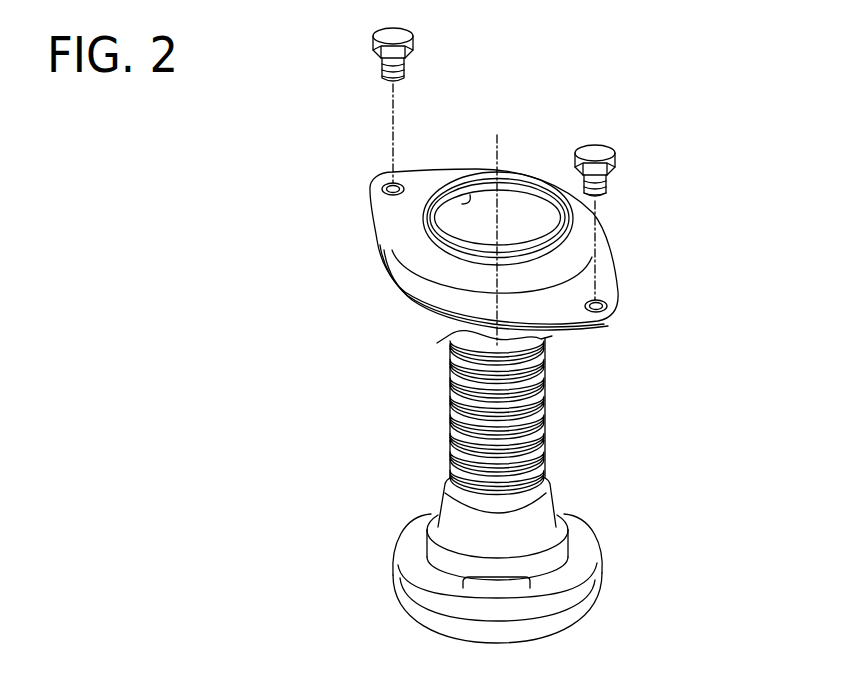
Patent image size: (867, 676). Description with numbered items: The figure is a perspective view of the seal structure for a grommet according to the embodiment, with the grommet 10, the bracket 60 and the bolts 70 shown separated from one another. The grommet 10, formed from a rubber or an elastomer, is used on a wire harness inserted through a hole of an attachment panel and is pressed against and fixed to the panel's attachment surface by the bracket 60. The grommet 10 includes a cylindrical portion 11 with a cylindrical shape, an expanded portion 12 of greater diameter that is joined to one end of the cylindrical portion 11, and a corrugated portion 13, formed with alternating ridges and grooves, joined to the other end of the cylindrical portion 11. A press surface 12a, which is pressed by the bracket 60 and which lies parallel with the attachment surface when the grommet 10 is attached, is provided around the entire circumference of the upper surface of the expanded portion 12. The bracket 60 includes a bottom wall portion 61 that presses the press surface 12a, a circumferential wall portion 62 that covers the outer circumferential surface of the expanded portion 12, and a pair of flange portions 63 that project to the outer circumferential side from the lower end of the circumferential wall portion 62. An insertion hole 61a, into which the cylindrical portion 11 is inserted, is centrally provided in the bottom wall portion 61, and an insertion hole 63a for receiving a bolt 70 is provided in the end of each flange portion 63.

The grommet 10 is at (527, 487).
The cylindrical portion 11 is at (556, 497).
The expanded portion 12 is at (527, 578).
The press surface 12a is at (583, 553).
The corrugated portion 13 is at (548, 383).
The bracket 60 is at (488, 246).
The bottom wall portion 61 is at (540, 198).
The insertion hole 61a is at (470, 195).
The circumferential wall portion 62 is at (488, 265).
The flange portions 63 is at (488, 270).
The insertion hole 63a is at (637, 332).
The bolt 70 is at (376, 31).